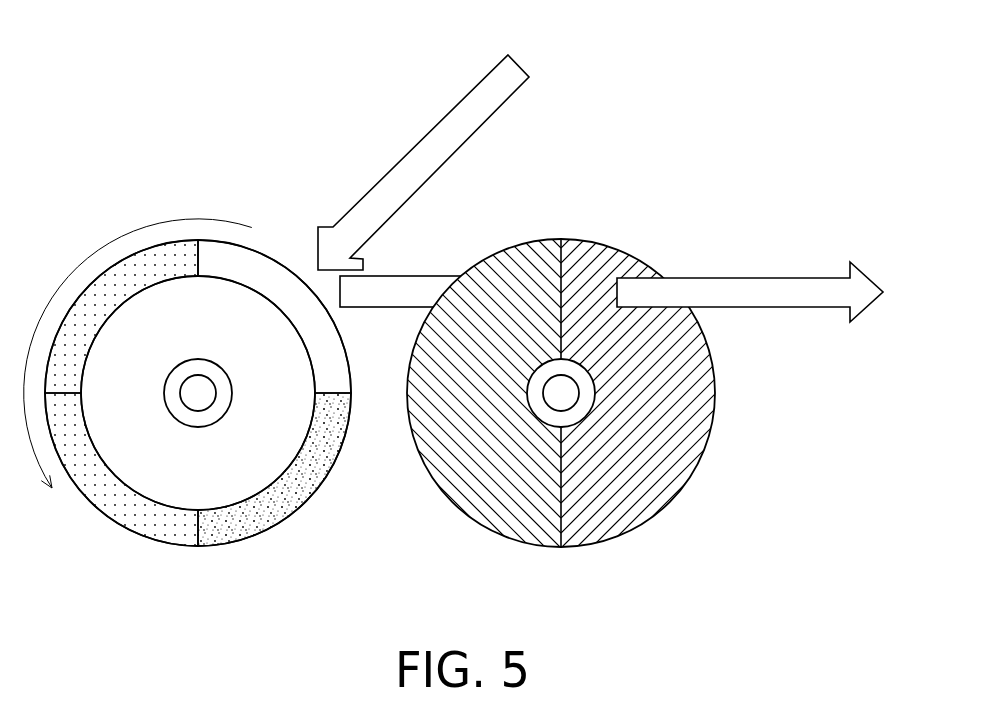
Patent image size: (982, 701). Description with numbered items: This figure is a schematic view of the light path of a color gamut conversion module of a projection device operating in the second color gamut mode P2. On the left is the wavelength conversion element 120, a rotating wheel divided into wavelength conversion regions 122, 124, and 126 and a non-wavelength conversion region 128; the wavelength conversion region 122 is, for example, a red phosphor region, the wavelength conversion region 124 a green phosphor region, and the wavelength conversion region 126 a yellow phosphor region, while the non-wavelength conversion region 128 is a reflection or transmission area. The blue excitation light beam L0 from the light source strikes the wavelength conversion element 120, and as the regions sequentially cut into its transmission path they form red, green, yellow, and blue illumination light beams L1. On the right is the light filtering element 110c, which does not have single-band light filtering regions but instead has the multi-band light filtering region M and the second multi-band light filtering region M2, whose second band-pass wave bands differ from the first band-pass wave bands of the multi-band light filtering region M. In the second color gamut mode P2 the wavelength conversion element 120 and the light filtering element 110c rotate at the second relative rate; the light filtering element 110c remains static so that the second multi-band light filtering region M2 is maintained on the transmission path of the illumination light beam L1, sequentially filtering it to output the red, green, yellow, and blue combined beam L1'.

The wavelength conversion element 120 is at (183, 394).
The wavelength conversion region 122 is at (267, 507).
The wavelength conversion region 124 is at (105, 495).
The wavelength conversion region 126 is at (105, 293).
The non-wavelength conversion region 128 is at (275, 275).
The light filtering element 110c is at (685, 417).
The excitation light beam L0 is at (437, 152).
The illumination light beam L1 is at (405, 263).
The combined beam L1' is at (770, 292).
The multi-band light filtering region M is at (505, 300).
The second multi-band light filtering region M2 is at (586, 284).
The second color gamut mode P2 is at (802, 609).